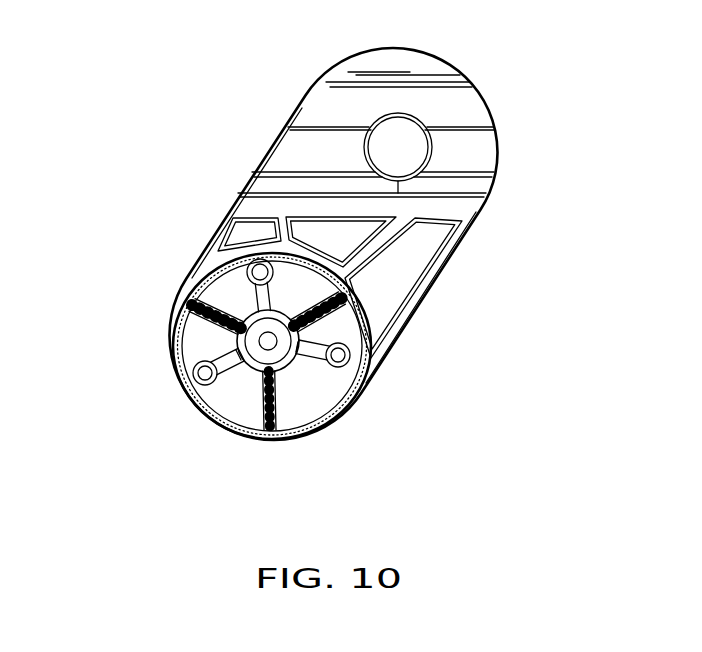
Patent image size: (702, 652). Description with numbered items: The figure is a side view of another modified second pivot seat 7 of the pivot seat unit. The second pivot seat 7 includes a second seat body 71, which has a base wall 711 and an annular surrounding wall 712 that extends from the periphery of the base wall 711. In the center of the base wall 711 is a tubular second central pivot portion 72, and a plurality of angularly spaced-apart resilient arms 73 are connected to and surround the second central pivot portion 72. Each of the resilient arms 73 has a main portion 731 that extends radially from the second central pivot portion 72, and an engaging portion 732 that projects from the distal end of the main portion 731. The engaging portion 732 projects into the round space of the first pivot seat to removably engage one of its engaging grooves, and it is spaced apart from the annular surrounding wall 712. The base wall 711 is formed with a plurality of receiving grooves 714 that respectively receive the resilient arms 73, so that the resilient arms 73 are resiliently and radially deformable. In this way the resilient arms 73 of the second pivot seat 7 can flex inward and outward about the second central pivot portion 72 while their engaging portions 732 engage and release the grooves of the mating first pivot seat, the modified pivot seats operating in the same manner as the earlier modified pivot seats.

The second pivot seat 7 is at (178, 268).
The second seat body 71 is at (207, 420).
The base wall 711 is at (333, 380).
The annular surrounding wall 712 is at (248, 436).
The receiving grooves 714 is at (200, 338).
The second central pivot portion 72 is at (372, 260).
The resilient arms 73 is at (205, 373).
The main portion 731 is at (228, 382).
The engaging portion 732 is at (195, 388).